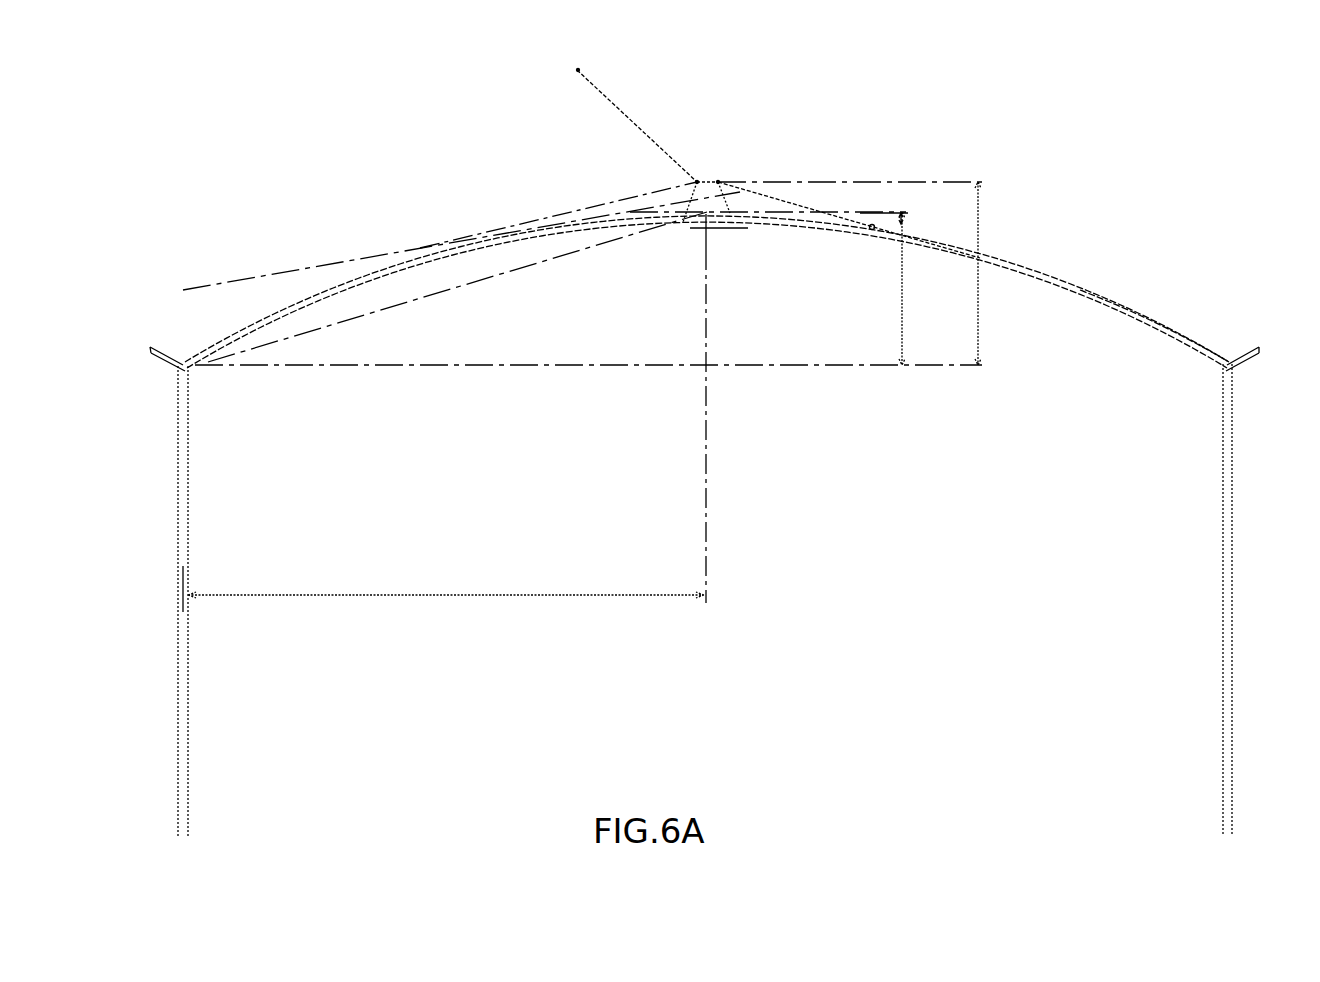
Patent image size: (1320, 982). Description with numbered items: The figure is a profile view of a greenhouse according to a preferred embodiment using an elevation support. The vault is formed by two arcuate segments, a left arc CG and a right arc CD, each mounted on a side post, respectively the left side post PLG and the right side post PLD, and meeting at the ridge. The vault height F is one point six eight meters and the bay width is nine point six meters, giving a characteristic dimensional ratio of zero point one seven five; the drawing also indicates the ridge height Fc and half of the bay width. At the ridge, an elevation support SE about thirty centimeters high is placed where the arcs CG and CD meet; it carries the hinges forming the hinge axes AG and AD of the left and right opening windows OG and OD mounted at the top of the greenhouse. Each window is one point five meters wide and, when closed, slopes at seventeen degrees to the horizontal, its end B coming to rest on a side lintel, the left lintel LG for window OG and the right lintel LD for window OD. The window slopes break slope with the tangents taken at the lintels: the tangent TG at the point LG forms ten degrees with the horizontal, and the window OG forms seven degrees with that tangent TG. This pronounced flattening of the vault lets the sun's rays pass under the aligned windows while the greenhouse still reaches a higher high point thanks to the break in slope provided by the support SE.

The end of opening window B is at (566, 72).
The left side opening window OG is at (612, 103).
The left hinge axis AG is at (697, 182).
The right hinge axis AD is at (720, 182).
The right side opening window OD is at (793, 204).
The elevation support SE is at (690, 188).
The left side lintel LG is at (536, 222).
The right side lintel LD is at (873, 225).
The left tangent TG is at (232, 282).
The left arcuate segment CG is at (478, 250).
The ridge height Fc is at (916, 288).
The vault height F is at (982, 273).
The right arcuate segment CD is at (1083, 296).
The left side post PLG is at (190, 435).
The right side post PLD is at (1222, 434).